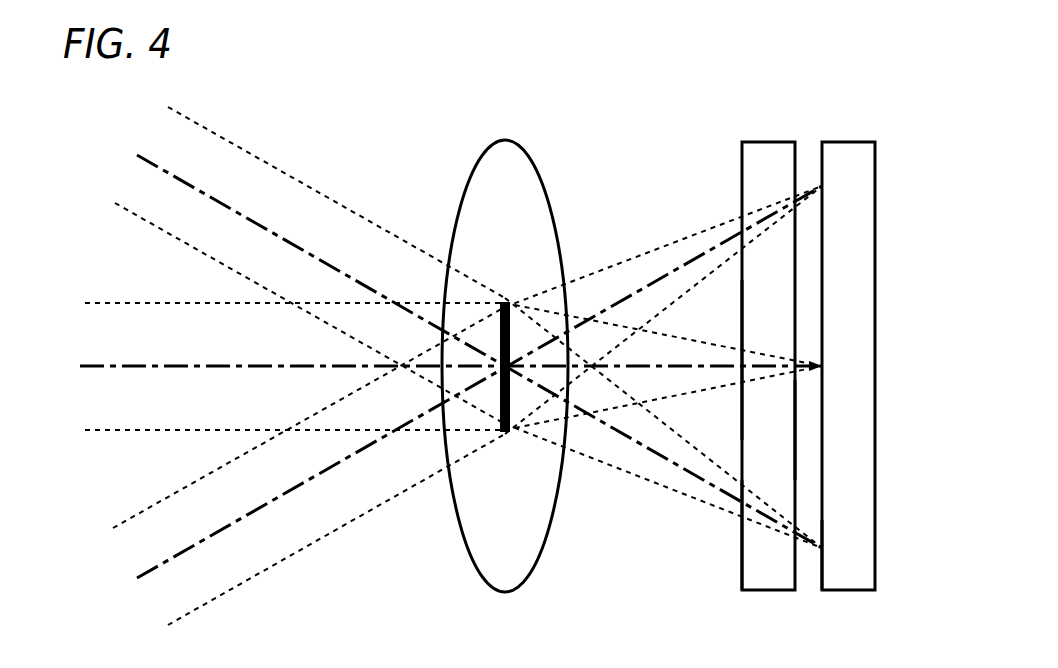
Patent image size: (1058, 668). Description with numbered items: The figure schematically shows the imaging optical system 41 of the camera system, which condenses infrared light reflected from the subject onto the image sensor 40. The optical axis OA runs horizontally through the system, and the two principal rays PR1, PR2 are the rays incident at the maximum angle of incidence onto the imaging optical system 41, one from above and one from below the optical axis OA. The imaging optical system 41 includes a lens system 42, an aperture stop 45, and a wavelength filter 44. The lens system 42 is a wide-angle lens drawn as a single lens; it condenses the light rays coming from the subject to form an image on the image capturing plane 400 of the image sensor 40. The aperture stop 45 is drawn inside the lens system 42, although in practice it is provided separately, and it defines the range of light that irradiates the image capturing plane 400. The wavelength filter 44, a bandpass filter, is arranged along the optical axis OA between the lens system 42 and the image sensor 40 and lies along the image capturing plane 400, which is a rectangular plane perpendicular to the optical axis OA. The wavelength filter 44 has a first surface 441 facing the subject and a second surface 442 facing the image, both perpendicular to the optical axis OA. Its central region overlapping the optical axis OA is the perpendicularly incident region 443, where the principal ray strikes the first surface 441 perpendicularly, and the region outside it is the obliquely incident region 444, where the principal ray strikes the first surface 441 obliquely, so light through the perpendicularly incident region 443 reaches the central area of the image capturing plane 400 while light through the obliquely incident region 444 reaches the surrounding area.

The image sensor 40 is at (816, 368).
The image capturing plane 400 is at (821, 574).
The imaging optical system 41 is at (504, 350).
The lens system 42 is at (475, 175).
The wavelength filter 44 is at (801, 344).
The first surface 441 is at (741, 538).
The second surface 442 is at (795, 433).
The perpendicularly incident region 443 is at (757, 372).
The obliquely incident region 444 is at (760, 312).
The aperture stop 45 is at (497, 426).
The optical axis OA is at (146, 362).
The principal ray PR1 is at (148, 153).
The principal ray PR2 is at (150, 574).